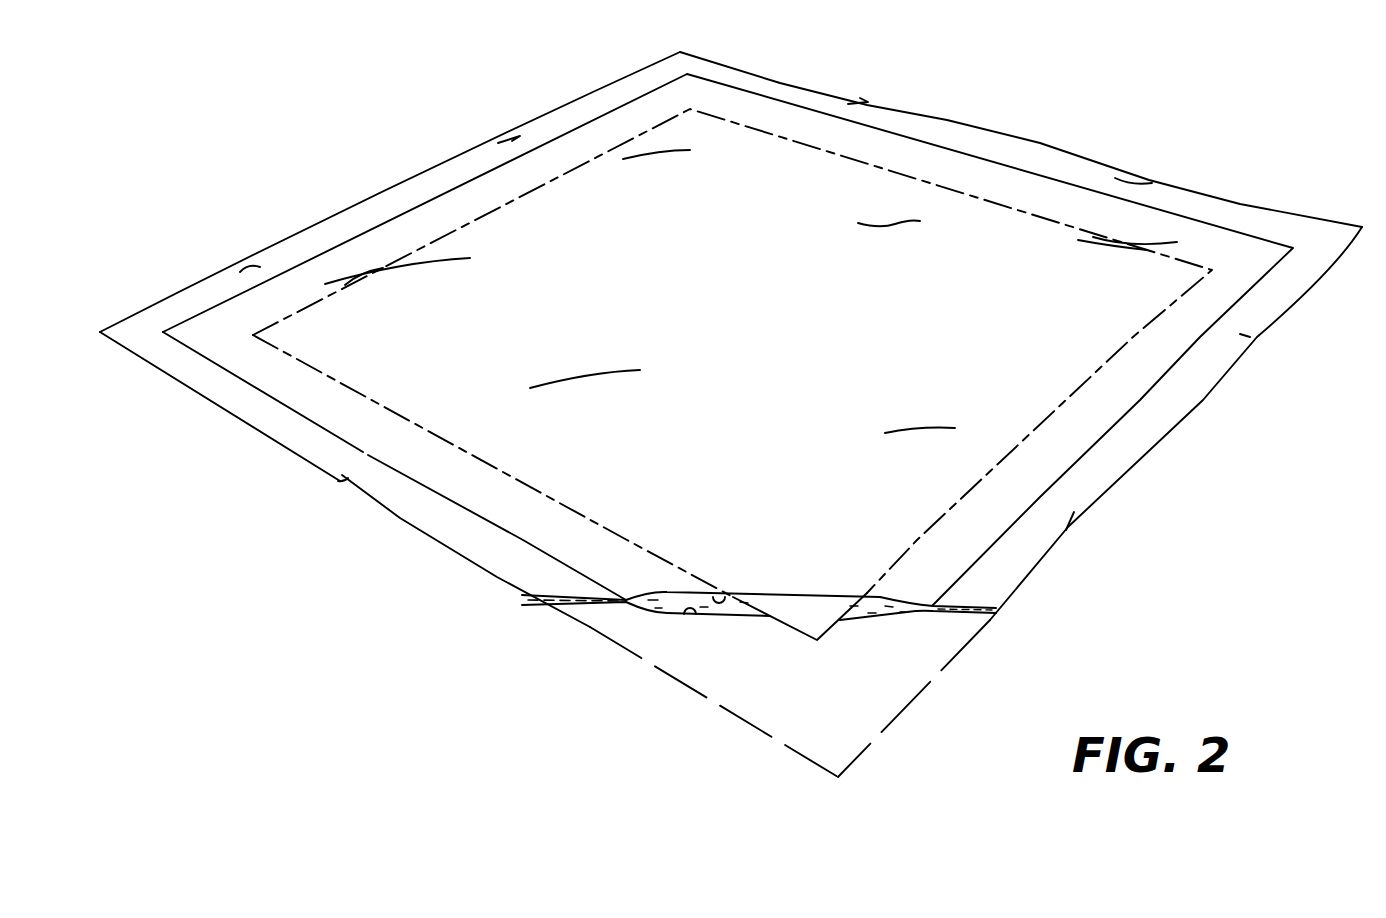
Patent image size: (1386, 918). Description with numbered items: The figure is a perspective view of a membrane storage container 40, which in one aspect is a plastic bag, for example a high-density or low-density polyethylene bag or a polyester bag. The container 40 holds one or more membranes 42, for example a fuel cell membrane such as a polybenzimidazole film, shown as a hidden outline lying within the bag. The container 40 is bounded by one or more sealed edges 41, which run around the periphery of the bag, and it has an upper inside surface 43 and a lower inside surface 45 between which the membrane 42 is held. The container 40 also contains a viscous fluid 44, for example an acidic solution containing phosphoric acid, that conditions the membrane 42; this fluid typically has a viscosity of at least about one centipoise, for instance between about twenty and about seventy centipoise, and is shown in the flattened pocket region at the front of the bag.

The membrane storage container 40 is at (1203, 153).
The sealed edge 41 is at (403, 195).
The membrane 42 is at (498, 208).
The upper inside surface 43 is at (720, 595).
The viscous fluid 44 is at (730, 607).
The lower inside surface 45 is at (690, 617).